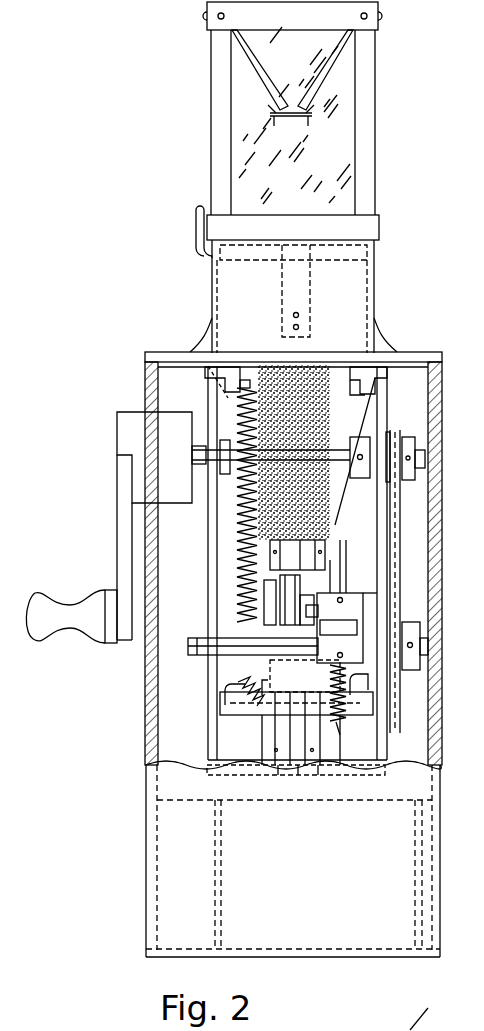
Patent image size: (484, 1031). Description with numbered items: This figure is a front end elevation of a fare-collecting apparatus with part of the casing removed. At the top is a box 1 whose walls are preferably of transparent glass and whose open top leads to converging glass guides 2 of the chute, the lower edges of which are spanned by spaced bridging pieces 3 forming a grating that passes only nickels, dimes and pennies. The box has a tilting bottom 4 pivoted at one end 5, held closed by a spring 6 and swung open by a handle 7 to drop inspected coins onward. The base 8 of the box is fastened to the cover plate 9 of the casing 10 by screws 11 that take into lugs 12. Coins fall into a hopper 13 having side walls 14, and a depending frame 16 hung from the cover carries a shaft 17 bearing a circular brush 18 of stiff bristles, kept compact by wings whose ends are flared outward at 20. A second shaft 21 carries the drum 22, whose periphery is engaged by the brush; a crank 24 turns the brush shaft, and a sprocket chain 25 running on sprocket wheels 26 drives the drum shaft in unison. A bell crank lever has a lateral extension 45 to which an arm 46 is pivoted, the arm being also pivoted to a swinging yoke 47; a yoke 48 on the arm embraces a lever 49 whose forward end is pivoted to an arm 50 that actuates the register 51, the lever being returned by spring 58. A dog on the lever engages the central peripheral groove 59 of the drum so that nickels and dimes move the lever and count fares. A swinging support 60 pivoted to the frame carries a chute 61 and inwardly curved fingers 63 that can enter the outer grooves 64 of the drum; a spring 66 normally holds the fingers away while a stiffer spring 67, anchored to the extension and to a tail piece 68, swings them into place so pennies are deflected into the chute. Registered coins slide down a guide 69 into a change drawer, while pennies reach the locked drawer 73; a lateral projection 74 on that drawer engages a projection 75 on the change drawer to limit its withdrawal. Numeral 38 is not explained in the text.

The box 1 is at (368, 130).
The converging glass guides 2 is at (308, 90).
The bridging pieces 3 is at (291, 120).
The tilting bottom 4 is at (345, 246).
The pivot end 5 is at (247, 258).
The spring 6 is at (308, 292).
The handle 7 is at (196, 232).
The base 8 is at (376, 306).
The cover plate 9 is at (420, 353).
The casing 10 is at (146, 378).
The screws 11 is at (293, 382).
The lugs 12 is at (202, 338).
The receiver-receptacle or hopper 13 is at (351, 395).
The side walls 14 is at (345, 478).
The depending frame 16 is at (209, 558).
The shaft 17 is at (338, 448).
The circular brush 18 is at (316, 364).
The flared outer ends 20 is at (343, 519).
The shaft 21 is at (195, 640).
The drum 22 is at (270, 745).
The crank 24 is at (88, 604).
The sprocket chain 25 is at (400, 533).
The sprocket wheels 26 is at (404, 437).
The rod 38 is at (347, 556).
The lateral extension 45 is at (298, 660).
The arm 46 is at (276, 612).
The swinging yoke 47 is at (297, 555).
The yoke 48 is at (311, 608).
The lever 49 is at (278, 590).
The arm 50 is at (338, 635).
The register 51 is at (352, 600).
The spring 58 is at (241, 501).
The peripheral groove 59 is at (299, 776).
The swinging support 60 is at (244, 680).
The chute 61 is at (272, 672).
The fingers 63 is at (332, 578).
The outer peripheral grooves 64 is at (278, 776).
The spring 66 is at (296, 703).
The stiffer spring 67 is at (349, 693).
The tail piece 68 is at (332, 724).
The guide 69 is at (212, 750).
The receptacle or drawer 73 is at (190, 800).
The lateral projection 74 is at (217, 848).
The lateral projection 75 is at (418, 860).